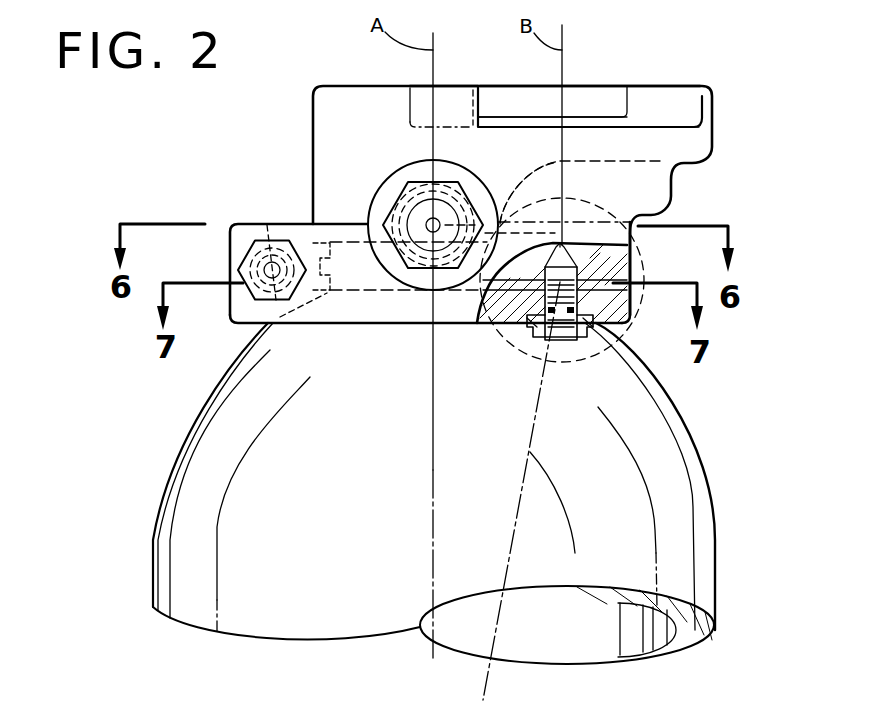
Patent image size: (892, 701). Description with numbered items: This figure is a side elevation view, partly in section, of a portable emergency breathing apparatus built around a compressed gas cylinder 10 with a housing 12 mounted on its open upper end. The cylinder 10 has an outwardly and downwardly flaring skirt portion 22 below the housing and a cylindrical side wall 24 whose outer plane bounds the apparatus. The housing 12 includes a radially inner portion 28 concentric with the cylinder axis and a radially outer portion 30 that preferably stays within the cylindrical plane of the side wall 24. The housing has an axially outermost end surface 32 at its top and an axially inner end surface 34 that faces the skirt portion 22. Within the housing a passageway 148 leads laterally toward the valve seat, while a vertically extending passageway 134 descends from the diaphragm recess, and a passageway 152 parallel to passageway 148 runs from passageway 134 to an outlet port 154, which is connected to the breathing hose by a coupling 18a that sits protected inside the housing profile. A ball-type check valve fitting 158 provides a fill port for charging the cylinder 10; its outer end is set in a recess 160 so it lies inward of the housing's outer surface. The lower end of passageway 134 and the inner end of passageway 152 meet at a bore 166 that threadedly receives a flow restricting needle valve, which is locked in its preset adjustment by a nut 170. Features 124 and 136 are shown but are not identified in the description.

The cylinder 10 is at (135, 464).
The housing 12 is at (598, 62).
The coupling 18a is at (267, 225).
The skirt portion 22 is at (197, 402).
The cylindrical side wall 24 is at (168, 582).
The radially inner portion 28 is at (300, 137).
The radially outer portion 30 is at (726, 153).
The axially outermost end surface 32 is at (457, 85).
The axially inner end surface 34 is at (474, 323).
The slot 124 is at (615, 97).
The vertically extending passageway 134 is at (632, 252).
The lip 136 is at (679, 98).
The passageway 148 is at (527, 207).
The passageway 152 is at (507, 323).
The outlet port 154 is at (273, 327).
The check valve fitting 158 is at (417, 207).
The recess 160 is at (418, 280).
The bore 166 is at (618, 318).
The nut 170 is at (584, 340).